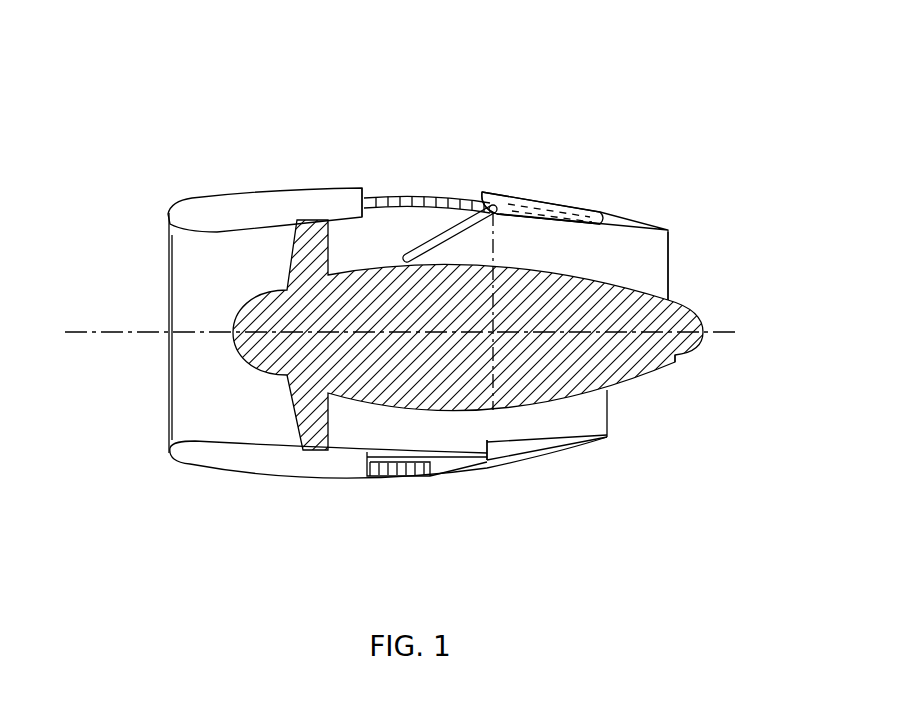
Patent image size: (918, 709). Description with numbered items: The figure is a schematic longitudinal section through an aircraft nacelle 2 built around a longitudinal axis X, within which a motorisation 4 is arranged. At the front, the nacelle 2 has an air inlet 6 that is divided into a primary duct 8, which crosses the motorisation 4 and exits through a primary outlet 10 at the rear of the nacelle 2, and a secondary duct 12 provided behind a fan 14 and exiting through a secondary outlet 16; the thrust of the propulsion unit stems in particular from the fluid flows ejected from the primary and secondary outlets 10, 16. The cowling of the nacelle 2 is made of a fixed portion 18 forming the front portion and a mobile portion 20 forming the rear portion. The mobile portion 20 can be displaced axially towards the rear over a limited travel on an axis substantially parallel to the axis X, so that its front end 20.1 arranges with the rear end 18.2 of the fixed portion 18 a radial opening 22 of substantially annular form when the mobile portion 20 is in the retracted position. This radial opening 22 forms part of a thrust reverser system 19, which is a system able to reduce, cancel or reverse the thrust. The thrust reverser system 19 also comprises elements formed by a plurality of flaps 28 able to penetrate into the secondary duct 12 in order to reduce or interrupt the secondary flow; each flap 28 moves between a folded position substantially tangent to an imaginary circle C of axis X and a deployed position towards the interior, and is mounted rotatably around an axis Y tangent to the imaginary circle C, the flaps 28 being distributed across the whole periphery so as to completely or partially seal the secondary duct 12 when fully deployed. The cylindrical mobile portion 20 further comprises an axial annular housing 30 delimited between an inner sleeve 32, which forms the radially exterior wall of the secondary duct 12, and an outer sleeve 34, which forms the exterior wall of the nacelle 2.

The aircraft nacelle 2 is at (368, 121).
The motorisation 4 is at (659, 275).
The air inlet 6 is at (170, 248).
The primary duct 8 is at (583, 313).
The primary outlet 10 is at (675, 362).
The secondary duct 12 is at (540, 428).
The fan 14 is at (215, 242).
The secondary outlet 16 is at (607, 437).
The fixed portion 18 is at (250, 207).
The rear end of the fixed portion 18.2 is at (362, 193).
The thrust reverser system 19 is at (470, 163).
The mobile portion 20 is at (658, 222).
The front end of the mobile portion 20.1 is at (482, 197).
The radial opening 22 is at (397, 199).
The flaps 28 is at (440, 240).
The axial annular housing 30 is at (597, 217).
The inner sleeve 32 is at (540, 217).
The outer sleeve 34 is at (548, 207).
The longitudinal axis X is at (65, 330).
The axis of rotation of the flap Y is at (496, 206).
The imaginary circle C is at (490, 443).